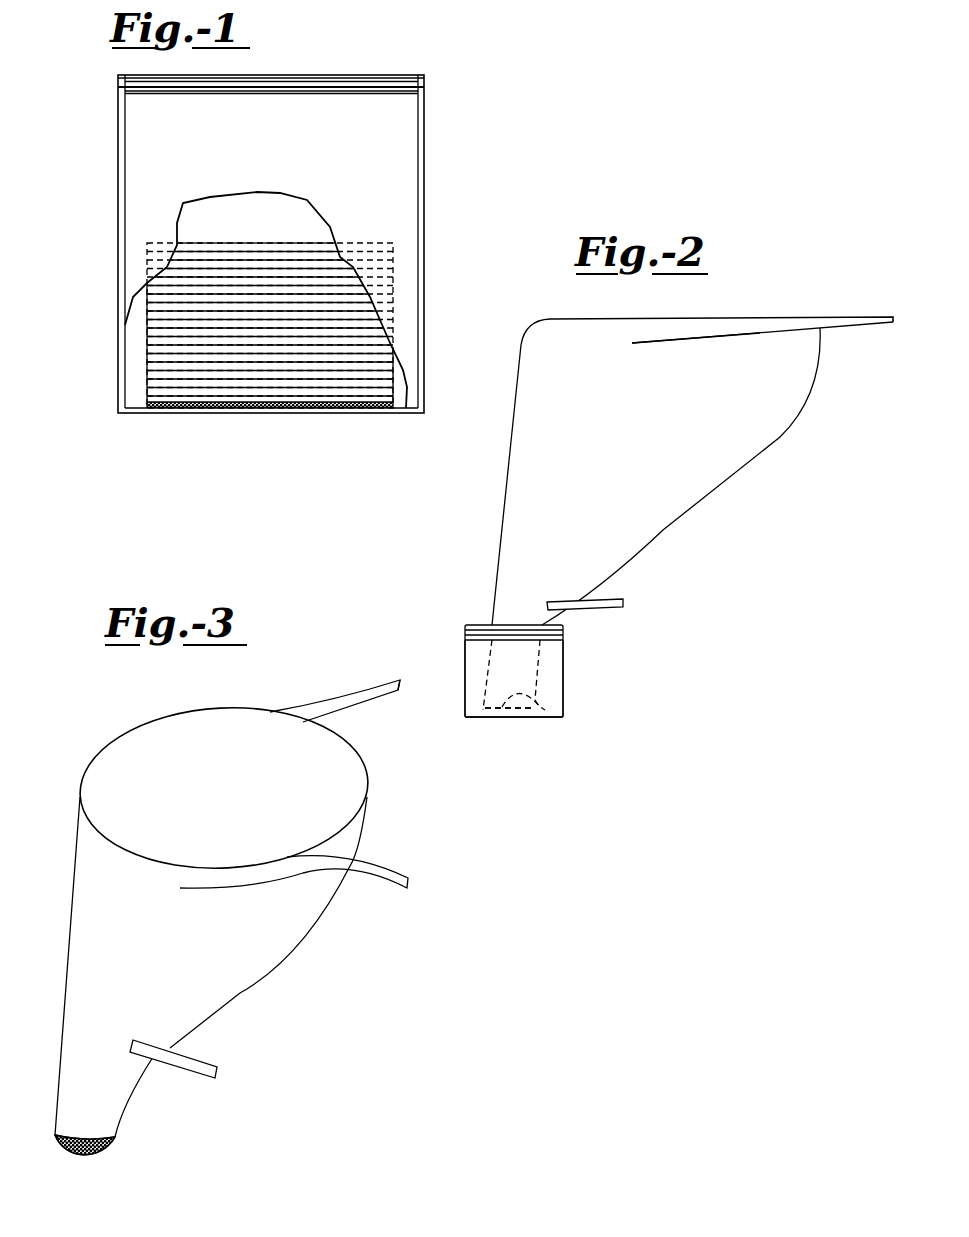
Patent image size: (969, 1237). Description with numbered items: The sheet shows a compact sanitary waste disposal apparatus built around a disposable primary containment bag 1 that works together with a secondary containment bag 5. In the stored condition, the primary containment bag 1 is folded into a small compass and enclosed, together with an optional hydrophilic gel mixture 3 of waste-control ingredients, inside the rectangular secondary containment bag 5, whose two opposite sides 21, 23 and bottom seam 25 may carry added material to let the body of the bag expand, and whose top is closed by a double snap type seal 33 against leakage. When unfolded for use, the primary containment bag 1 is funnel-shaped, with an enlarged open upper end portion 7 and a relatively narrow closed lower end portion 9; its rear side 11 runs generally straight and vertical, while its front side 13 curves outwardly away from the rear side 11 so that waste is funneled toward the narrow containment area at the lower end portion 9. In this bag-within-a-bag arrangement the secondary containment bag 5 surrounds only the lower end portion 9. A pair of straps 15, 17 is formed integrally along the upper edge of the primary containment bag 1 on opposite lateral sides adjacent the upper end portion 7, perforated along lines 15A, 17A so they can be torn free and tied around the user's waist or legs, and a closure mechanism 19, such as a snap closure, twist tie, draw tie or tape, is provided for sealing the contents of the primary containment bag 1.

In FIG. 1, the primary containment bag 1 is at (267, 232).
In FIG. 2, the primary containment bag 1 is at (757, 306).
In FIG. 3, the primary containment bag 1 is at (105, 728).
In FIG. 1, the hydrophilic gel mixture 3 is at (255, 408).
In FIG. 2, the hydrophilic gel mixture 3 is at (527, 717).
In FIG. 3, the hydrophilic gel mixture 3 is at (83, 1147).
In FIG. 1, the secondary containment bag 5 is at (437, 149).
In FIG. 2, the secondary containment bag 5 is at (573, 724).
In FIG. 2, the upper end portion 7 is at (553, 318).
In FIG. 3, the upper end portion 7 is at (217, 725).
In FIG. 2, the lower end portion 9 is at (545, 710).
In FIG. 3, the lower end portion 9 is at (102, 1152).
In FIG. 2, the rear side 11 is at (512, 450).
In FIG. 3, the rear side 11 is at (70, 910).
In FIG. 2, the front side 13 is at (723, 480).
In FIG. 3, the front side 13 is at (240, 993).
In FIG. 3, the strap 15 is at (332, 705).
In FIG. 3, the perforation line 15A is at (370, 707).
In FIG. 2, the strap 17 is at (850, 315).
In FIG. 3, the strap 17 is at (375, 857).
In FIG. 2, the perforation line 17A is at (705, 342).
In FIG. 3, the perforation line 17A is at (242, 890).
In FIG. 2, the closure mechanism 19 is at (600, 598).
In FIG. 3, the closure mechanism 19 is at (183, 1067).
In FIG. 1, the side of secondary containment bag 21 is at (118, 122).
In FIG. 2, the side of secondary containment bag 21 is at (465, 658).
In FIG. 1, the side of secondary containment bag 23 is at (423, 192).
In FIG. 2, the side of secondary containment bag 23 is at (565, 690).
In FIG. 1, the bottom seam 25 is at (168, 412).
In FIG. 2, the bottom seam 25 is at (485, 718).
In FIG. 1, the double snap type seal 33 is at (238, 94).
In FIG. 2, the double snap type seal 33 is at (556, 642).